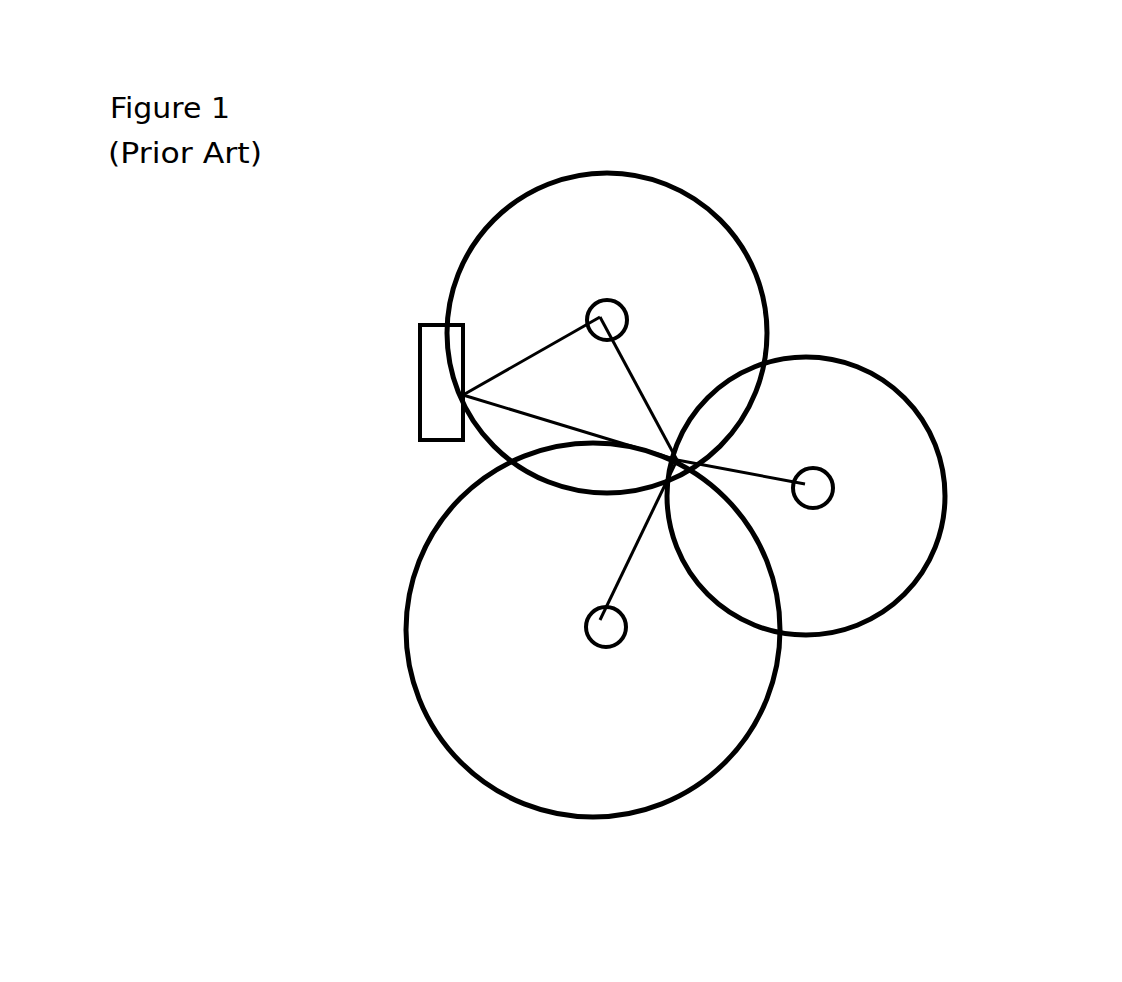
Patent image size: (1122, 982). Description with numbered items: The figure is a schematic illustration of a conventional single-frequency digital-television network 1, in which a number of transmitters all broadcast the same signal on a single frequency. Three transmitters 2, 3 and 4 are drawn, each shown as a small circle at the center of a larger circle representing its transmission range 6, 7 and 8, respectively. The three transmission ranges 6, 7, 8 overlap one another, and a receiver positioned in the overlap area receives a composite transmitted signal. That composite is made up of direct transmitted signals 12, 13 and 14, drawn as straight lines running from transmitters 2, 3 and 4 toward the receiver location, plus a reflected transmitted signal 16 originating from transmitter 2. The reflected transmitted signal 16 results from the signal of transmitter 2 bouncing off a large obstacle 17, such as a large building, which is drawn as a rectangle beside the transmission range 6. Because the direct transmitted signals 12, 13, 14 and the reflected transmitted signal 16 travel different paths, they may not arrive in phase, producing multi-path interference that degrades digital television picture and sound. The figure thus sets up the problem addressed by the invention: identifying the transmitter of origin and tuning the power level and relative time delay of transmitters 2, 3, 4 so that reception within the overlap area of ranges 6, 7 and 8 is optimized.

The single-frequency digital-television network 1 is at (704, 121).
The transmitter 2 is at (615, 303).
The transmitter 3 is at (822, 503).
The transmitter 4 is at (613, 648).
The transmission range 6 is at (540, 178).
The transmission range 7 is at (935, 431).
The transmission range 8 is at (473, 773).
The direct transmitted signal 12 is at (643, 380).
The direct transmitted signal 13 is at (748, 466).
The direct transmitted signal 14 is at (627, 567).
The reflected transmitted signal 16 is at (532, 340).
The large obstacle 17 is at (420, 417).